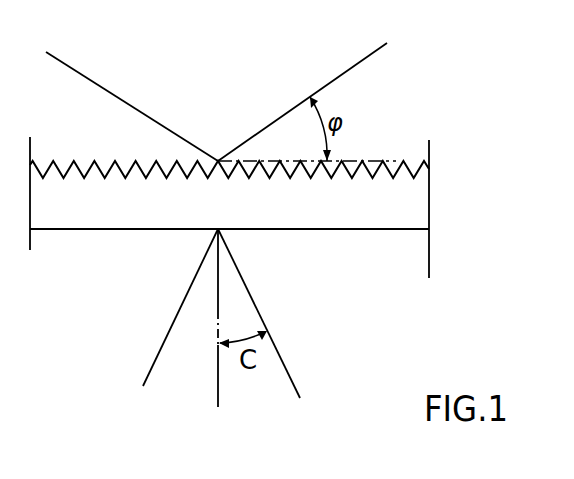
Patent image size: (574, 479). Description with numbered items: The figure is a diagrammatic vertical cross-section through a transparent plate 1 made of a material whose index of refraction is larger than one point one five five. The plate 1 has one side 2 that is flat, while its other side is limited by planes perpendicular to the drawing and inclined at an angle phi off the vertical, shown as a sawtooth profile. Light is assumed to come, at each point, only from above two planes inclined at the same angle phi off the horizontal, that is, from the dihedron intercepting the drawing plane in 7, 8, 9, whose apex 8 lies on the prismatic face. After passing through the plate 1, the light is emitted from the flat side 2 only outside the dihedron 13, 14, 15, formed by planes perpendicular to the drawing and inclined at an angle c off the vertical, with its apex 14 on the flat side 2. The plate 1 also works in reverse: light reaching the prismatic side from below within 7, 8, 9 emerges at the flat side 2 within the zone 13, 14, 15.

The plate 1 is at (315, 209).
The flat side 2 is at (110, 228).
The dihedron boundary point 7 is at (87, 78).
The dihedron apex 8 is at (227, 133).
The dihedron boundary point 9 is at (343, 75).
The emission dihedron boundary point 13 is at (155, 363).
The emission dihedron apex 14 is at (225, 215).
The emission dihedron boundary point 15 is at (309, 375).